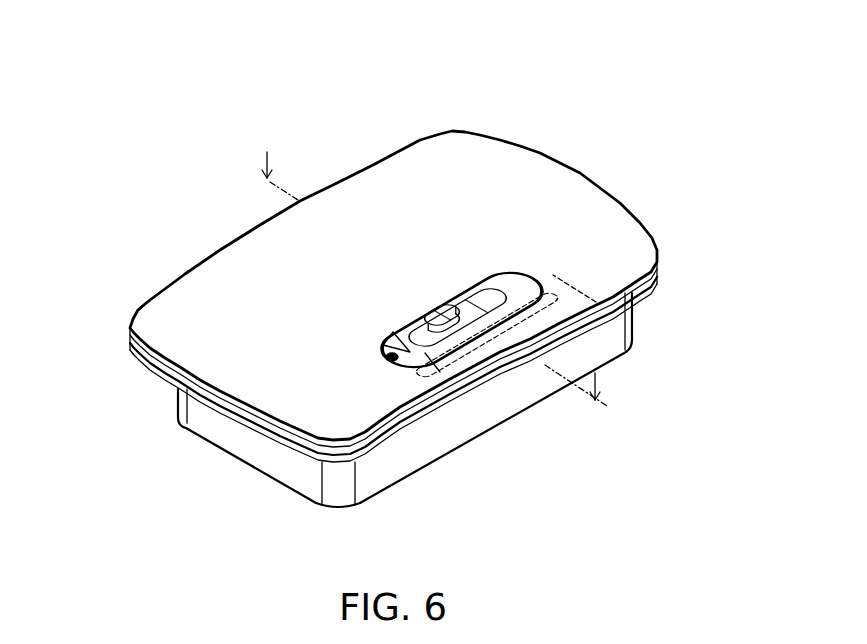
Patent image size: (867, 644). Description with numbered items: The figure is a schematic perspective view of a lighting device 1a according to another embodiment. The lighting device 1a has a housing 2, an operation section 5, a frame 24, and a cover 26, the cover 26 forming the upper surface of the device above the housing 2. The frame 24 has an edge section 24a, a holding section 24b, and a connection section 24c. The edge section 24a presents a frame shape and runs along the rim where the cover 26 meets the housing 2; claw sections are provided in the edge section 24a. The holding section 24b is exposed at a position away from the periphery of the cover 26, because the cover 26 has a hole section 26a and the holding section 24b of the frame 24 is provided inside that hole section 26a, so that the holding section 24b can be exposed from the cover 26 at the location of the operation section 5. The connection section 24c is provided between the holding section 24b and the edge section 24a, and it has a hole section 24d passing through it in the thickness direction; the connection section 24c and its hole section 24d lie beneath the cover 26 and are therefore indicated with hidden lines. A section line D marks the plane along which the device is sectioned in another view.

The lighting device 1a is at (157, 190).
The housing 2 is at (395, 494).
The operation section 5 is at (488, 292).
The frame 24 is at (563, 277).
The edge section 24a is at (248, 430).
The holding section 24b is at (425, 353).
The connection section 24c is at (596, 302).
The hole section 24d is at (504, 358).
The cover 26 is at (476, 188).
The hole section 26a is at (392, 352).
The section line D is at (439, 265).